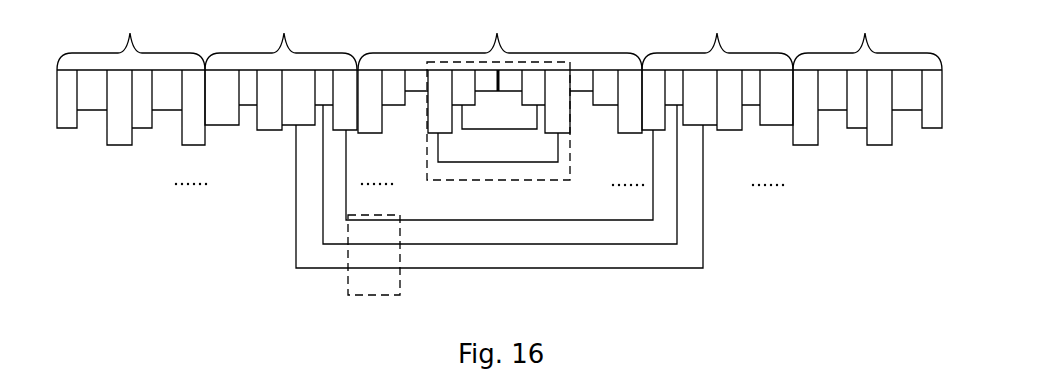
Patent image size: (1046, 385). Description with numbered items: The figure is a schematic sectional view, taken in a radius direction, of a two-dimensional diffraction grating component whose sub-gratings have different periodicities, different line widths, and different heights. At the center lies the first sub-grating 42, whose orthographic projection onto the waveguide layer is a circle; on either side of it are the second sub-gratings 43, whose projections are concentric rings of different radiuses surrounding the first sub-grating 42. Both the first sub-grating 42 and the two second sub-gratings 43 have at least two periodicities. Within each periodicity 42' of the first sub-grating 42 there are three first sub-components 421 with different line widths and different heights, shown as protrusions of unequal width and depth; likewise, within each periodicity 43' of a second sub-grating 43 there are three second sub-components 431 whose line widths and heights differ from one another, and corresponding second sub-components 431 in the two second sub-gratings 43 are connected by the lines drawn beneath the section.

The second sub-grating 43 is at (499, 78).
The first sub-grating 42 is at (500, 72).
The first sub-component 421 is at (498, 124).
The periodicity of the first sub-grating 42' is at (515, 126).
The second sub-component 431 is at (499, 195).
The periodicity of the second sub-grating 43' is at (389, 261).